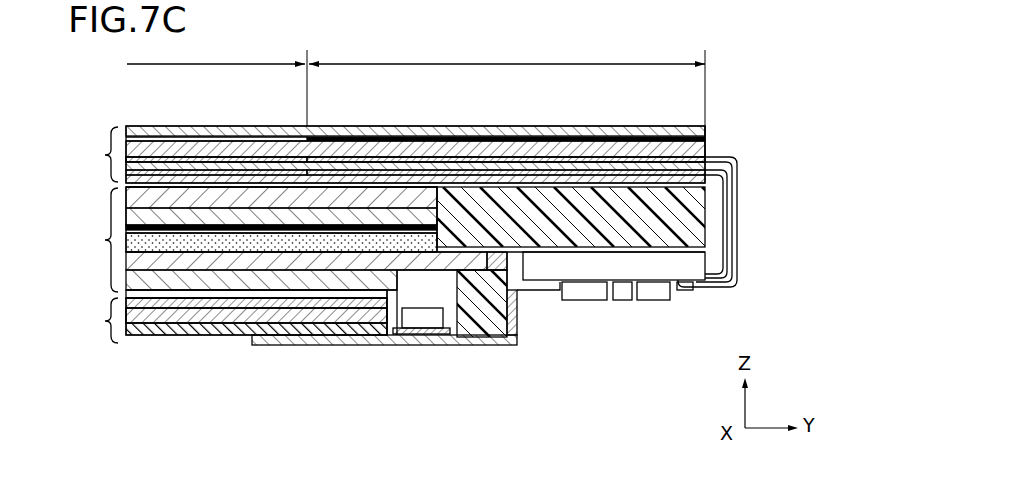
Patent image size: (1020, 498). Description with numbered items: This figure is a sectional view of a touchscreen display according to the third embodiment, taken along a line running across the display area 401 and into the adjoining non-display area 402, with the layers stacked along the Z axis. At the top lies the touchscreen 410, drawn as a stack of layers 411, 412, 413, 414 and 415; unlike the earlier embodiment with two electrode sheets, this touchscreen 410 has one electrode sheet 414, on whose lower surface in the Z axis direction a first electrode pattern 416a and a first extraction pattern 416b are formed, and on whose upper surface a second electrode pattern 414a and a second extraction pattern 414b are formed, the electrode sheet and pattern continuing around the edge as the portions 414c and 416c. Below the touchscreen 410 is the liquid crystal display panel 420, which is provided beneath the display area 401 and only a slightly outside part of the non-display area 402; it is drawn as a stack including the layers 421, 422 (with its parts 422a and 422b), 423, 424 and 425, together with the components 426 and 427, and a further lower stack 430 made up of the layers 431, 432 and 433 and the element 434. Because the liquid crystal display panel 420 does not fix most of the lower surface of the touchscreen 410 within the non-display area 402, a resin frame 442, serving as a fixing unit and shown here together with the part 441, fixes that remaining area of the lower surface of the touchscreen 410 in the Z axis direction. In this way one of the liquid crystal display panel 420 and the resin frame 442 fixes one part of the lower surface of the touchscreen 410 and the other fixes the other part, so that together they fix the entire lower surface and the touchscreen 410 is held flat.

The display area 401 is at (217, 83).
The non-display area 402 is at (507, 98).
The touchscreen 410 is at (104, 155).
The cover layer 411 is at (708, 130).
The light shielding layer 412 is at (708, 139).
The adhesive layer 413 is at (708, 150).
The electrode sheet 414 is at (716, 160).
The second electrode pattern 414a is at (205, 157).
The second extraction pattern 414b is at (373, 159).
The bent portion of flexible substrate 414c is at (740, 230).
The adhesive layer 415 is at (716, 167).
The first electrode pattern 416a is at (277, 172).
The first extraction pattern 416b is at (440, 172).
The bent wiring portion 416c is at (728, 255).
The liquid crystal display panel 420 is at (104, 240).
The spacer 421 is at (383, 292).
The wiring layer 422 is at (352, 300).
The first wiring layer portion 422a is at (165, 328).
The second wiring layer portion 422b is at (402, 334).
The support layer 423 is at (304, 262).
The resin layer 424 is at (276, 280).
The adhesive layer 425 is at (236, 308).
The circuit board 426 is at (693, 270).
The connector 427 is at (480, 337).
The sensor unit 430 is at (104, 320).
The sensor layer 431 is at (143, 318).
The electrode layer 432 is at (162, 303).
The insulating layer 433 is at (206, 315).
The electronic component 434 is at (421, 318).
The housing frame 441 is at (518, 338).
The resin frame 442 is at (497, 303).